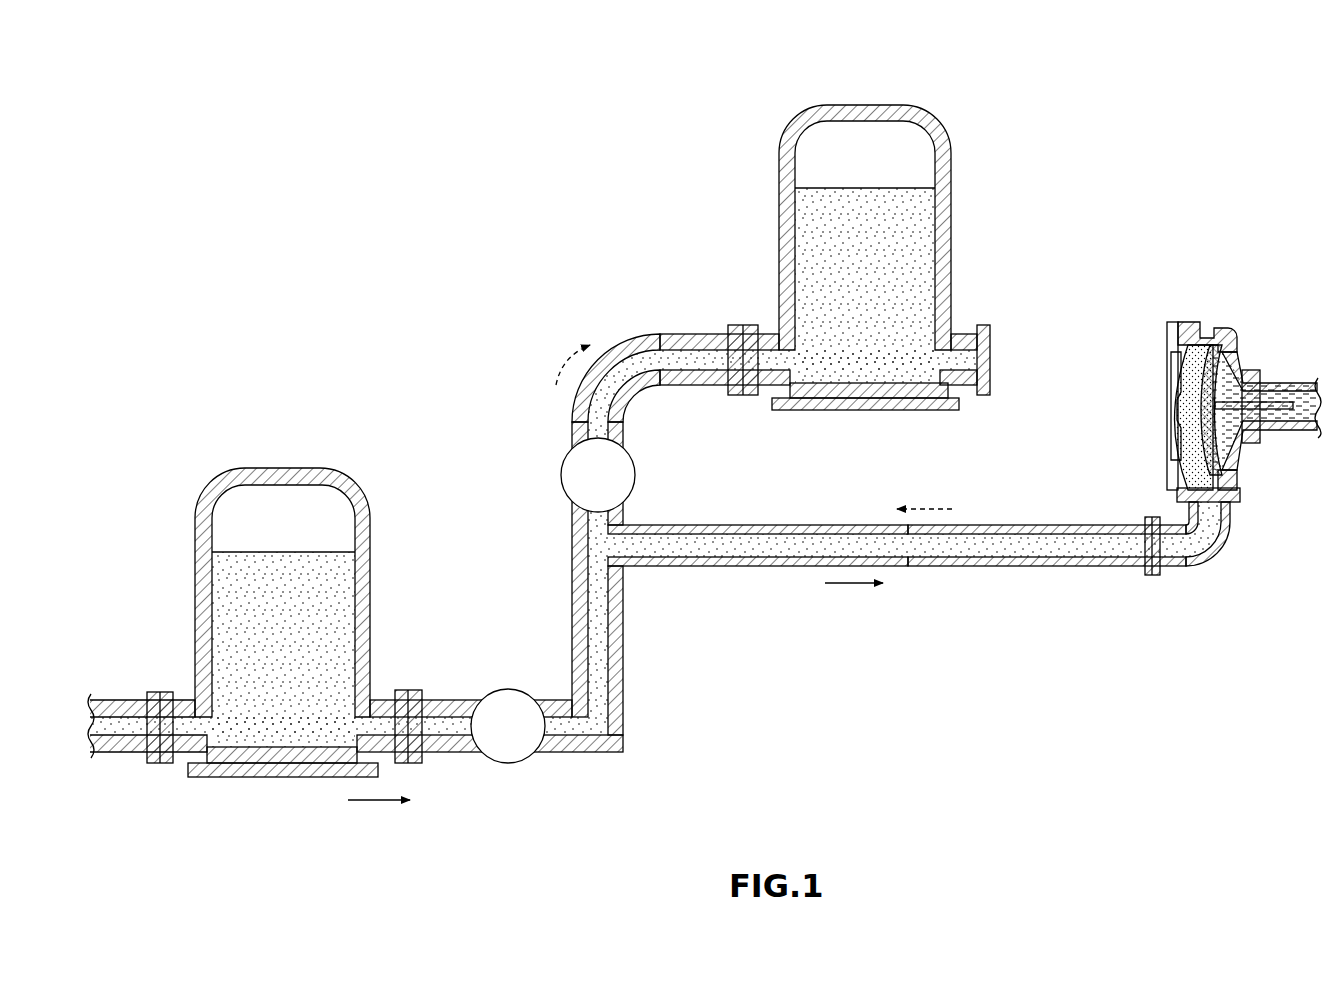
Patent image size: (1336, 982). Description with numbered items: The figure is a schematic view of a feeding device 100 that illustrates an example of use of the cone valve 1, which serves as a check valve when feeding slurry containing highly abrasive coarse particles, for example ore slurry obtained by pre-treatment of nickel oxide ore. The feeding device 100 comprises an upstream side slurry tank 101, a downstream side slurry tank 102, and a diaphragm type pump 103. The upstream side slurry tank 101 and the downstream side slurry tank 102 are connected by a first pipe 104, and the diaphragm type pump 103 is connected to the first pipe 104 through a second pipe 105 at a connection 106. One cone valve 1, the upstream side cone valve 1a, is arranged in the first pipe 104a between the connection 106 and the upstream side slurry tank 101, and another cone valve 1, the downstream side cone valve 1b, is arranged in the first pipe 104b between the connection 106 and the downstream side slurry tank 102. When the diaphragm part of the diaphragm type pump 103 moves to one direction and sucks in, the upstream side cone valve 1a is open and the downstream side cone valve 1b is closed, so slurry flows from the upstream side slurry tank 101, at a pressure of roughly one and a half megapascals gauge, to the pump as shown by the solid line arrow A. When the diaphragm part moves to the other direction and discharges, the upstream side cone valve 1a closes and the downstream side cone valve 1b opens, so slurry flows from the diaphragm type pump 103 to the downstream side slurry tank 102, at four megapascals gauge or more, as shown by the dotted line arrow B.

The feeding device 100 is at (1199, 48).
The upstream side slurry tank 101 is at (204, 489).
The downstream side slurry tank 102 is at (940, 123).
The diaphragm type pump 103 is at (1225, 332).
The first pipe 104 is at (539, 560).
The first pipe (upstream portion) 104a is at (440, 753).
The first pipe (downstream portion) 104b is at (607, 352).
The second pipe 105 is at (1052, 567).
The connection 106 is at (624, 566).
The cone valve 1 is at (546, 600).
The upstream side cone valve 1a is at (508, 688).
The downstream side cone valve 1b is at (563, 470).